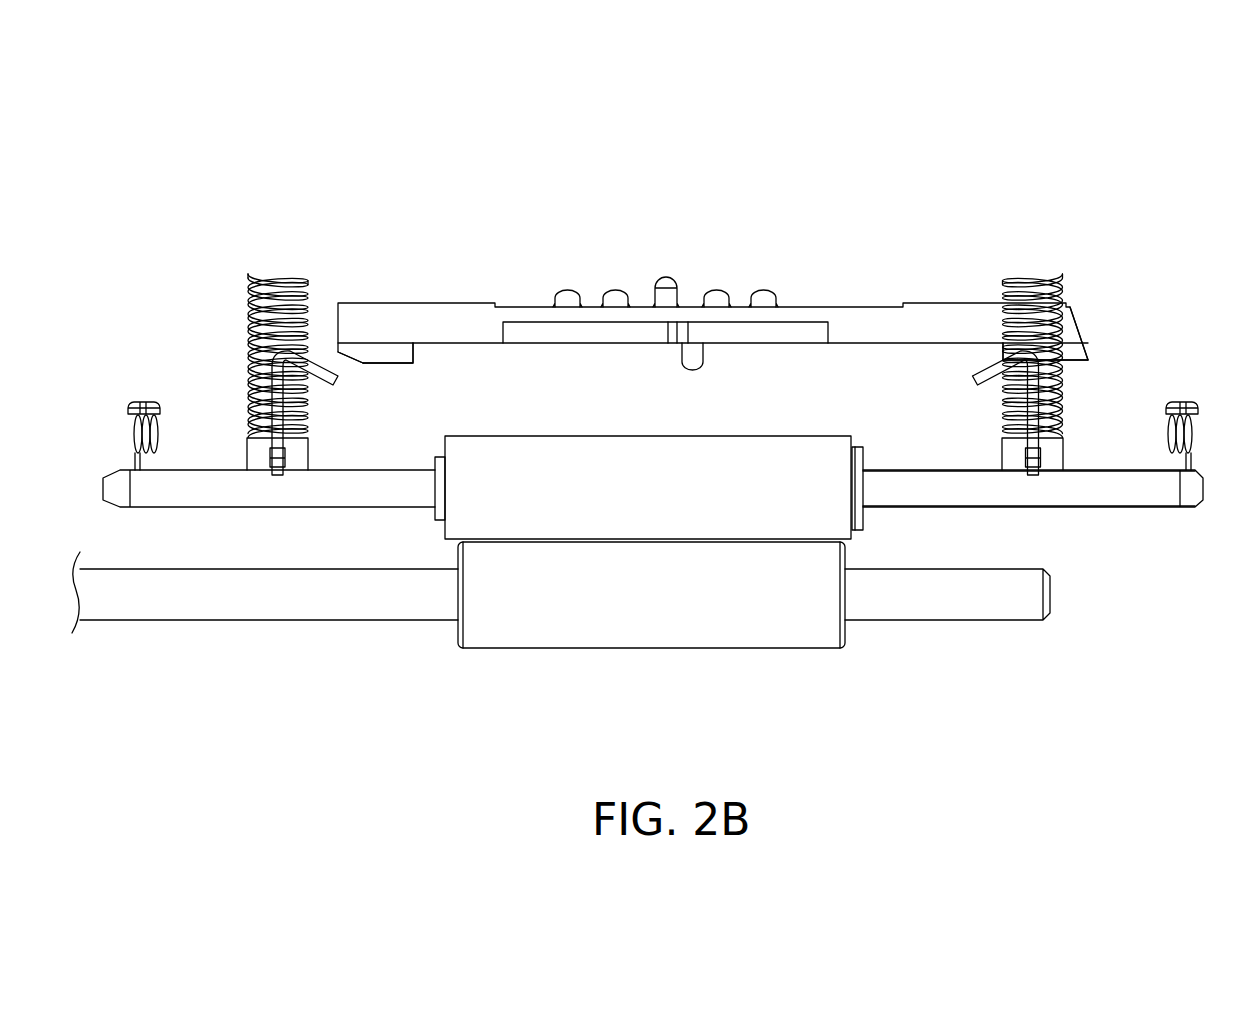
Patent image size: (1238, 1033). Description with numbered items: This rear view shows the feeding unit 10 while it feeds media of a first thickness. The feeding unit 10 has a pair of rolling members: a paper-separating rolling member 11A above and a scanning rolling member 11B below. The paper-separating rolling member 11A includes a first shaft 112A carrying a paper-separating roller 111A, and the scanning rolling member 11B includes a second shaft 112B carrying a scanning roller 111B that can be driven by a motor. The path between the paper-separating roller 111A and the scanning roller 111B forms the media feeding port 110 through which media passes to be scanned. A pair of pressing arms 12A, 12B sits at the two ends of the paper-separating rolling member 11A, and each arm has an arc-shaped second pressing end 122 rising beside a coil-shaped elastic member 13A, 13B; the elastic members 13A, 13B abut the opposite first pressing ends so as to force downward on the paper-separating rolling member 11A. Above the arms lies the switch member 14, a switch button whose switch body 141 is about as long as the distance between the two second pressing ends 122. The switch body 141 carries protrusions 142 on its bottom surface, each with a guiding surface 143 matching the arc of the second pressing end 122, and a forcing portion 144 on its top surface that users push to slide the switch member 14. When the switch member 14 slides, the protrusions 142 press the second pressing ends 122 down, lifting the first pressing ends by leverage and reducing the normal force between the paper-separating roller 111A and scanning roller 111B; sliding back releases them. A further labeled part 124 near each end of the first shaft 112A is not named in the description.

The feeding unit 10 is at (1132, 106).
The switch member 14 is at (735, 250).
The switch body 141 is at (860, 328).
The protrusion 142 is at (403, 353).
The guiding surface 143 is at (348, 362).
The forcing portion 144 is at (663, 282).
The elastic member 13A is at (280, 280).
The elastic member 13B is at (1035, 280).
The second pressing end 122 is at (330, 355).
The retaining clip 124 is at (253, 413).
The pressing arm 12A is at (270, 390).
The pressing arm 12B is at (1032, 445).
The media feeding port 110 is at (582, 538).
The paper-separating rolling member 11A is at (908, 383).
The paper-separating roller 111A is at (863, 463).
The first shaft 112A is at (950, 490).
The scanning rolling member 11B is at (826, 745).
The scanning roller 111B is at (808, 623).
The second shaft 112B is at (922, 597).